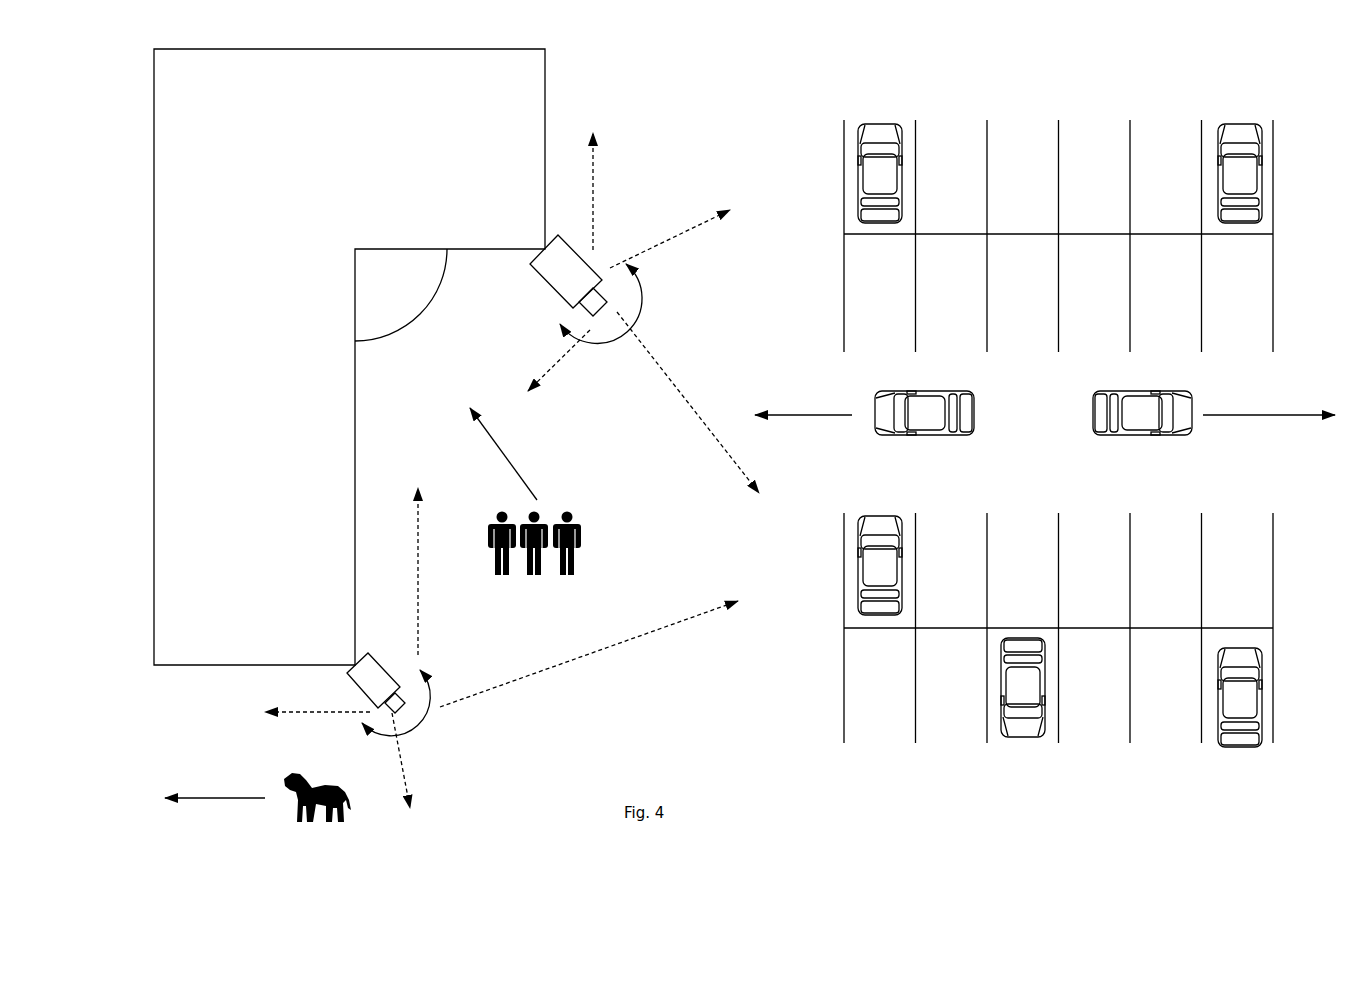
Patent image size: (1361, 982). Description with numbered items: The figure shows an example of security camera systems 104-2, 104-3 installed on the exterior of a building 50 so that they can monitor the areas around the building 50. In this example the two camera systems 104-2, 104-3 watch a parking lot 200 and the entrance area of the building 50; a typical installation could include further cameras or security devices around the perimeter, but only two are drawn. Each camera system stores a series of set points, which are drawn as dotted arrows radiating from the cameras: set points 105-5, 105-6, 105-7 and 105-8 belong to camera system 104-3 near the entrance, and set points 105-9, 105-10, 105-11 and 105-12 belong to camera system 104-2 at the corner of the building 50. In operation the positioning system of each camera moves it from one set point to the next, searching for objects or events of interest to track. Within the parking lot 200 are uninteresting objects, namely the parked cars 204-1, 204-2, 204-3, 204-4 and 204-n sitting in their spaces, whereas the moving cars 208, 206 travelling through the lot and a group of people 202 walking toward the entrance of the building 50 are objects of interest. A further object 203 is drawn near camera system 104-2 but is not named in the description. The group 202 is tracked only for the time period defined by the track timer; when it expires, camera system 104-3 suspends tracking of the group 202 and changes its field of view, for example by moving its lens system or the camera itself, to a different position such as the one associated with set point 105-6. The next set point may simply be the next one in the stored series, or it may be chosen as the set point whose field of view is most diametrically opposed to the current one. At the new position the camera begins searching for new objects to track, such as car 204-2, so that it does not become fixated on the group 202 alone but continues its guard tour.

The building 50 is at (556, 79).
The security camera system 104-2 is at (346, 680).
The security camera system 104-3 is at (530, 266).
The set point 105-5 is at (597, 170).
The set point 105-6 is at (669, 241).
The set point 105-7 is at (661, 368).
The set point 105-8 is at (545, 377).
The set point 105-9 is at (420, 618).
The set point 105-10 is at (524, 677).
The set point 105-11 is at (408, 782).
The set point 105-12 is at (310, 715).
The parking lot 200 is at (1283, 81).
The group of people 202 is at (599, 518).
The animal (dog) 203 is at (290, 800).
The parked car 204-1 is at (1228, 125).
The parked car 204-2 is at (873, 122).
The parked car 204-3 is at (858, 518).
The parked car 204-4 is at (1012, 736).
The parked car 204-n is at (1232, 748).
The moving car 206 is at (1102, 393).
The moving car 208 is at (875, 396).